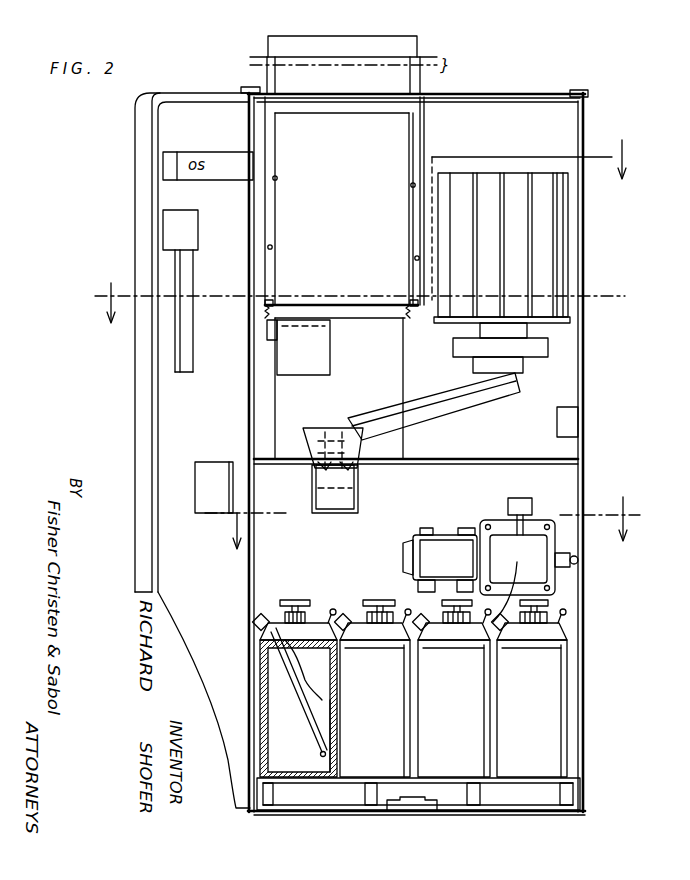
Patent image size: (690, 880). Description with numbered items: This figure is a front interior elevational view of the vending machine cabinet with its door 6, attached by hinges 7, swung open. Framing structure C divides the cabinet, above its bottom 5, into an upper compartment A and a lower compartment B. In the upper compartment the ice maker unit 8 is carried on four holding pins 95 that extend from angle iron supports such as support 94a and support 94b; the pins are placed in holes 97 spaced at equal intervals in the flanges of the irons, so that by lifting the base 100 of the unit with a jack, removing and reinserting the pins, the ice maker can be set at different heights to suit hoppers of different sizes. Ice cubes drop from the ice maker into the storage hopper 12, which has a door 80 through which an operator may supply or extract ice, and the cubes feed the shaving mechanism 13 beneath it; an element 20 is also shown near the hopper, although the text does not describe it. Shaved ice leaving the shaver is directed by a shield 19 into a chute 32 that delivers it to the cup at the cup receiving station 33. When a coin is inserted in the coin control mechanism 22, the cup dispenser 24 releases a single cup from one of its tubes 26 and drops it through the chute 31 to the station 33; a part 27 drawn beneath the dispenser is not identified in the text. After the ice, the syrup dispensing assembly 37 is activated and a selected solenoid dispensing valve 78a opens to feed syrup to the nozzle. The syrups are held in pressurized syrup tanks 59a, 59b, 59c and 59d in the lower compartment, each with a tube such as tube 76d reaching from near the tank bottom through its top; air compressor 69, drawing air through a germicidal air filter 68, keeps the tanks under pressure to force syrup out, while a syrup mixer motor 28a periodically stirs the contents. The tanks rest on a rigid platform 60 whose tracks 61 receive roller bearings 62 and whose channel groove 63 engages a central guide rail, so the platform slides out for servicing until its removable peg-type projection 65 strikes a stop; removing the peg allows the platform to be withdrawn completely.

The ice maker unit 8 is at (268, 50).
The holes 97 is at (272, 245).
The angle iron support 94a is at (276, 257).
The angle iron support 94b is at (412, 270).
The holding pins 95 is at (283, 298).
The base 100 is at (365, 305).
The coin control mechanism 22 is at (183, 263).
The door 6 is at (365, 244).
The cup dispenser 24 is at (512, 174).
The tubes 26 is at (503, 239).
The bottom 5 is at (539, 177).
The upper compartment A is at (563, 362).
The drum motor 27 is at (547, 350).
The chute 31 is at (485, 393).
The solenoid dispensing valve 78a is at (572, 424).
The framing structure C is at (572, 459).
The hopper 12 is at (339, 388).
The control unit 20 is at (298, 347).
The door 80 is at (292, 360).
The shaving mechanism 13 is at (315, 396).
The shield 19 is at (322, 428).
The chute 32 is at (355, 433).
The syrup dispensing assembly 37 is at (363, 474).
The cup receiving station 33 is at (360, 496).
The hinges 7 is at (422, 534).
The germicidal air filter 68 is at (523, 510).
The air compressor 69 is at (440, 560).
The syrup mixer motor 28a is at (262, 627).
The lower compartment B is at (563, 607).
The syrup tank 59a is at (529, 688).
The syrup tank 59b is at (452, 688).
The syrup tank 59c is at (373, 688).
The syrup tank 59d is at (295, 688).
The tube 76d is at (330, 729).
The roller bearings 62 is at (386, 769).
The platform 60 is at (418, 794).
The tracks 61 is at (260, 812).
The peg-type projection 65 is at (532, 790).
The channel groove 63 is at (403, 810).